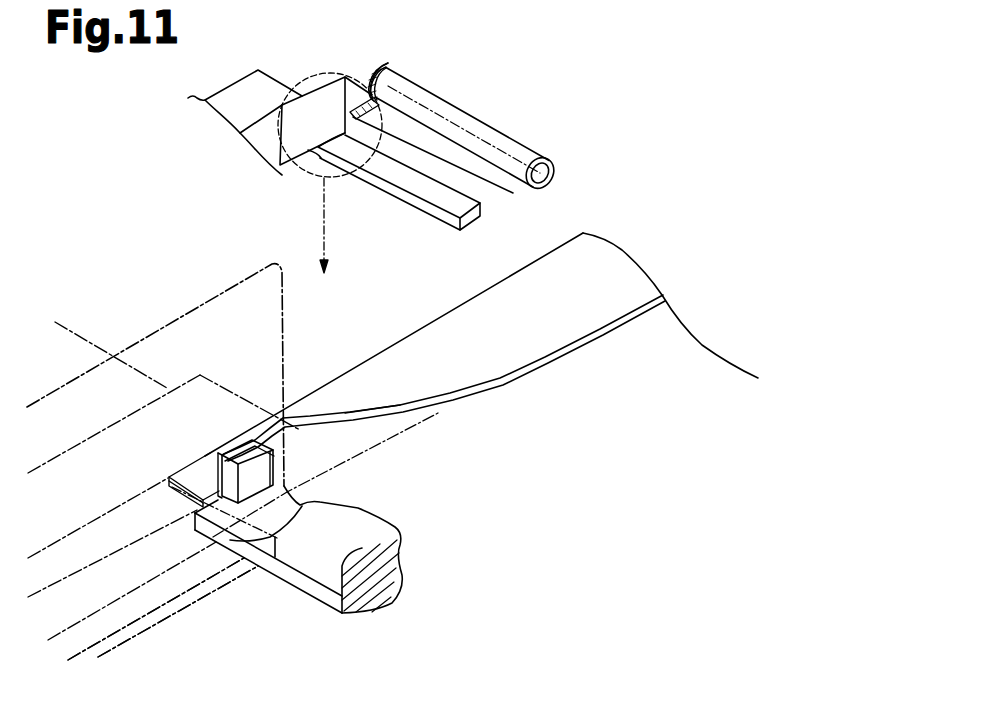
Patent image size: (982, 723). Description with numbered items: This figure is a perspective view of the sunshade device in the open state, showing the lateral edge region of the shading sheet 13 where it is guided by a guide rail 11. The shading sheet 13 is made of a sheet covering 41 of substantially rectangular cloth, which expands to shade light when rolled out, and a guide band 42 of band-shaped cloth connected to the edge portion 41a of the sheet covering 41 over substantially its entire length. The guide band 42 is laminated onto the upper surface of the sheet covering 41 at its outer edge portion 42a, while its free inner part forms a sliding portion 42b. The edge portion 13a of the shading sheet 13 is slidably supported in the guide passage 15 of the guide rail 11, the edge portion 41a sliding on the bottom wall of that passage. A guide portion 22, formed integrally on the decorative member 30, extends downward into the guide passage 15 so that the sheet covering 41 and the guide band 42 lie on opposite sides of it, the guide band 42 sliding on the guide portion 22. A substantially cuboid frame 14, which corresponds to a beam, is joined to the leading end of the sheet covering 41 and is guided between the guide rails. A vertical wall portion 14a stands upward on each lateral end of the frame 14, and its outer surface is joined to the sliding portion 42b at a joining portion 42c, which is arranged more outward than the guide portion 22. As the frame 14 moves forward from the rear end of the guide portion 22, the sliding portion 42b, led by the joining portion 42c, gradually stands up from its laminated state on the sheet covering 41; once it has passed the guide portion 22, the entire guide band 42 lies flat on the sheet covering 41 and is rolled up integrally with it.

The guide rail 11 is at (164, 397).
The shading sheet 13 is at (513, 194).
The edge portion of the shading sheet 13a is at (390, 70).
The frame 14 is at (418, 202).
The vertical wall portion 14a is at (247, 452).
The guide passage 15 is at (164, 500).
The guide portion 22 is at (199, 592).
The decorative member 30 is at (284, 296).
The sheet covering 41 is at (476, 121).
The edge portion of the sheet covering 41a is at (198, 592).
The guide band 42 is at (380, 74).
The outer edge portion of the guide band 42a is at (188, 475).
The sliding portion 42b is at (372, 428).
The joining portion 42c is at (211, 462).